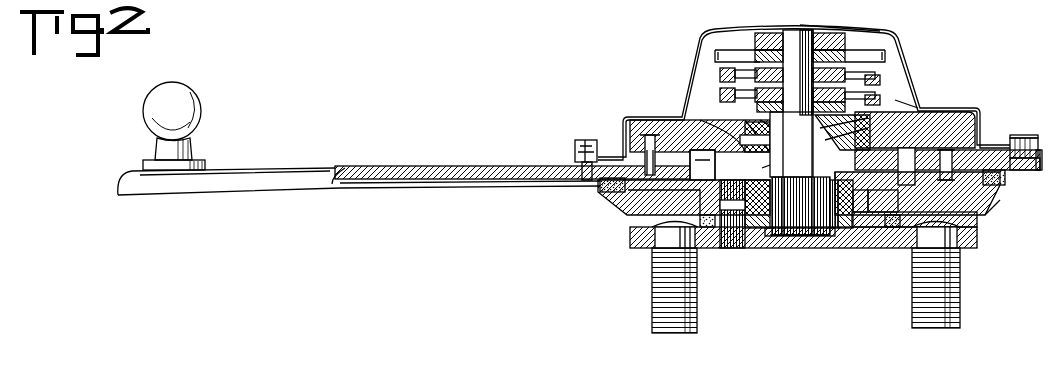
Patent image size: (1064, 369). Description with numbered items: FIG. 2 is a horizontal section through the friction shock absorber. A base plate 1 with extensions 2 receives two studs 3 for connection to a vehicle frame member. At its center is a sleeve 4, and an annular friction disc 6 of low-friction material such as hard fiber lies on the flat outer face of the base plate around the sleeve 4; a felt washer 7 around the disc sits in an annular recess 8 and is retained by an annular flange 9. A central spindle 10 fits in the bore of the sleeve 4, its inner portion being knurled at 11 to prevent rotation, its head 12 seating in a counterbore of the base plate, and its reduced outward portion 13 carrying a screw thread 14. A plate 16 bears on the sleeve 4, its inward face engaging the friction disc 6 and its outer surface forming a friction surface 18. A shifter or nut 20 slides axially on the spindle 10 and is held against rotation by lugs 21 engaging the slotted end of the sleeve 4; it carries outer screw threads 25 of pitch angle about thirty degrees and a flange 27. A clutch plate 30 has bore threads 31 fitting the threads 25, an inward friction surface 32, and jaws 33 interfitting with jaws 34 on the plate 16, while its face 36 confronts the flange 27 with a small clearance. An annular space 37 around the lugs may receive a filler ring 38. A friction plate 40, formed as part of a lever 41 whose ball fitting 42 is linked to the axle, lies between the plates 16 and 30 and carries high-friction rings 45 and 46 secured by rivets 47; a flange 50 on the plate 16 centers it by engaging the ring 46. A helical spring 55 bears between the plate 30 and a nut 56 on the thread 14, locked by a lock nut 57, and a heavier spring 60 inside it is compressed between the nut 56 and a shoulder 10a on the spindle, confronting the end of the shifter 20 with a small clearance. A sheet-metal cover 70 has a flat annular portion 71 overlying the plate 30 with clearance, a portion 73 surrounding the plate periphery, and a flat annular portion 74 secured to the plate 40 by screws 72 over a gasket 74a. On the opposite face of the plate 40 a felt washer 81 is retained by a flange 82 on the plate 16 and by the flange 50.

The base plate 1 is at (775, 250).
The extensions 2 is at (648, 250).
The studs 3 is at (657, 285).
The sleeve 4 is at (845, 250).
The annular friction disc 6 is at (855, 250).
The washer 7 is at (862, 250).
The annular recess 8 is at (888, 250).
The annular flange 9 is at (888, 250).
The central spindle 10 is at (786, 150).
The seat or shoulder 10a is at (735, 74).
The knurled or toothed portion 11 is at (800, 237).
The head 12 is at (830, 240).
The outward portion 13 is at (798, 32).
The screw thread 14 is at (862, 30).
The plate 16 is at (633, 222).
The friction surface 18 is at (638, 200).
The shifter or nut 20 is at (766, 140).
The lugs 21 is at (778, 165).
The screw threads 25 is at (777, 121).
The flange 27 is at (915, 130).
The friction plate or clutch plate 30 is at (672, 118).
The screw threads 31 is at (890, 112).
The friction surface 32 is at (633, 117).
The lugs or jaws 33 is at (702, 150).
The jaws 34 is at (710, 248).
The face 36 is at (745, 135).
The annular space 37 is at (730, 250).
The filler ring 38 is at (742, 250).
The friction plate 40 is at (1010, 178).
The arm or lever 41 is at (412, 166).
The ball fitting 42 is at (198, 102).
The friction ring 45 is at (988, 150).
The friction ring 46 is at (975, 230).
The rivets 47 is at (648, 135).
The flange 50 is at (978, 215).
The spring 55 is at (920, 80).
The nut 56 is at (730, 50).
The lock nut 57 is at (768, 33).
The spring 60 is at (878, 80).
The housing or cover 70 is at (835, 33).
The flat annular portion 71 is at (960, 150).
The screws 72 is at (582, 140).
The portion 73 is at (1000, 135).
The flat annular portion 74 is at (1024, 138).
The gasket 74a is at (1048, 156).
The washer 81 is at (606, 191).
The flange 82 is at (1005, 190).